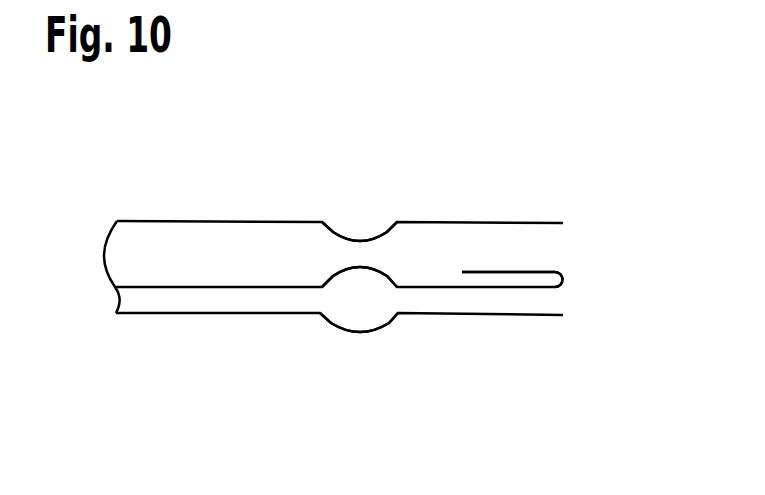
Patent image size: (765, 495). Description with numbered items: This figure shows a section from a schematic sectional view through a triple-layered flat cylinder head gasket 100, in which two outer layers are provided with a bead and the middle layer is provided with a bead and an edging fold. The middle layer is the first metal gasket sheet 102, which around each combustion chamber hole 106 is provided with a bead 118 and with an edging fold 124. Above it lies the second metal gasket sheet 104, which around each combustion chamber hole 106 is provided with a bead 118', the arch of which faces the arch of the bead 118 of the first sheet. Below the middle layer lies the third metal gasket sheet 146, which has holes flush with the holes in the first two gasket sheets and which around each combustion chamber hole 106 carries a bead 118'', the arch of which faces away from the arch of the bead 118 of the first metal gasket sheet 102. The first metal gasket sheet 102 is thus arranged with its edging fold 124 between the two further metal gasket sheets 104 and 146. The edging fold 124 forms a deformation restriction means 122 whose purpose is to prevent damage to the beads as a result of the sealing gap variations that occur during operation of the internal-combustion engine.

The cylinder head gasket 100 is at (155, 190).
The first metal gasket sheet 102 is at (273, 287).
The second metal gasket sheet 104 is at (202, 221).
The combustion chamber hole 106 is at (672, 286).
The bead 118 is at (378, 210).
The bead 118' is at (359, 187).
The bead 118'' is at (359, 369).
The deformation restriction means 122 is at (538, 268).
The edging fold 124 is at (516, 272).
The third metal gasket sheet 146 is at (202, 313).